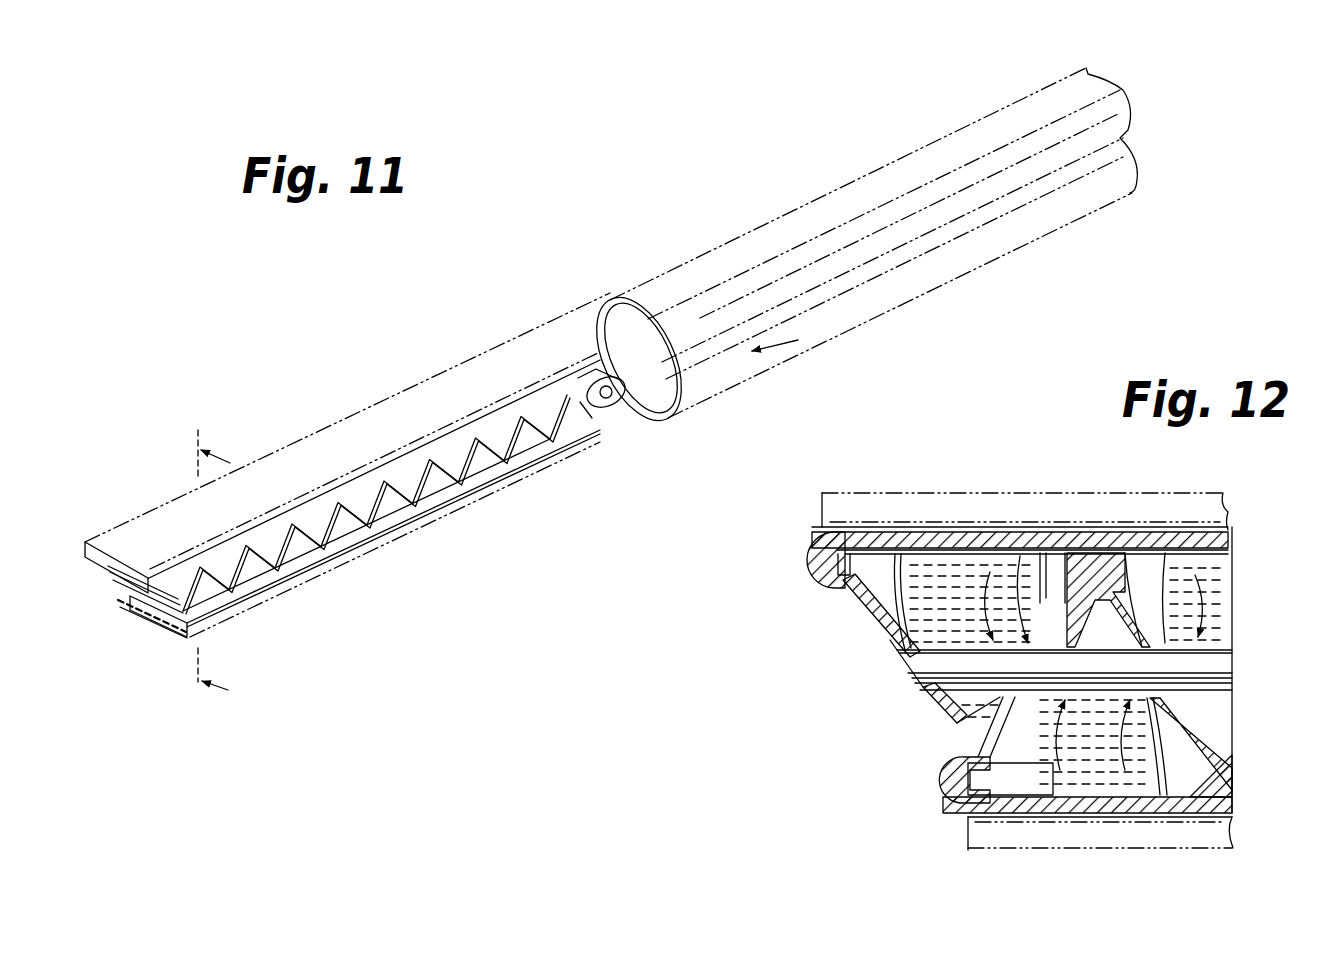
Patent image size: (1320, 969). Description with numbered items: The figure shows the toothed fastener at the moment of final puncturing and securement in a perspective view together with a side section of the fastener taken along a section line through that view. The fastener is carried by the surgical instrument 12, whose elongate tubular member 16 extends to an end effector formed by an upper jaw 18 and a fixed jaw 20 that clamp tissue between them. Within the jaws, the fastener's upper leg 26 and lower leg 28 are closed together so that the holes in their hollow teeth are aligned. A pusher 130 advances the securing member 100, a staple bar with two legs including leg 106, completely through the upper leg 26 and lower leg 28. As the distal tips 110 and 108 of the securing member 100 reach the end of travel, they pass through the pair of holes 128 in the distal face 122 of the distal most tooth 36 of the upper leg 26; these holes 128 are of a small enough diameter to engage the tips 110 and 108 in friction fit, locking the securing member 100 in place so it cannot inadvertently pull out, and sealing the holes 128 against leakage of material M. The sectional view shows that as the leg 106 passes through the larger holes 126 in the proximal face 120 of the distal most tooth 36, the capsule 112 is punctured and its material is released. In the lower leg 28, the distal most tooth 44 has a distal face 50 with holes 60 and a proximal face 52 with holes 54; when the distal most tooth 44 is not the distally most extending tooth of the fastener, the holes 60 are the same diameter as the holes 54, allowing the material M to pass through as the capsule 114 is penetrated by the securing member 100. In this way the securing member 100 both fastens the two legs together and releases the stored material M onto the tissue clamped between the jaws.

In FIG. 11, the elongate tubular member 16 is at (686, 262).
In FIG. 11, the pusher 130 is at (752, 262).
In FIG. 11, the upper jaw 18 is at (353, 433).
In FIG. 11, the fixed jaw 20 is at (385, 543).
In FIG. 11, the upper leg 26 is at (282, 500).
In FIG. 12, the upper leg 26 is at (812, 560).
In FIG. 11, the lower leg 28 is at (300, 557).
In FIG. 12, the lower leg 28 is at (1220, 773).
In FIG. 11, the securing member 100 is at (602, 398).
In FIG. 11, the holes 128 is at (150, 573).
In FIG. 12, the holes 128 is at (923, 693).
In FIG. 11, the distal tip 110 is at (115, 582).
In FIG. 12, the distal tip 110 is at (913, 662).
In FIG. 11, the distal face 122 is at (127, 619).
In FIG. 11, the distal tip 108 is at (152, 625).
In FIG. 11, the surgical instrument 12 is at (190, 563).
In FIG. 12, the capsule 112 is at (890, 547).
In FIG. 12, the holes 126 is at (1025, 548).
In FIG. 12, the distal most tooth 36 is at (850, 603).
In FIG. 12, the holes 54 is at (1190, 670).
In FIG. 12, the leg 106 is at (1220, 670).
In FIG. 12, the proximal face 120 is at (960, 720).
In FIG. 12, the material M is at (943, 763).
In FIG. 12, the distal most tooth 44 is at (1000, 750).
In FIG. 12, the distal face 50 is at (1020, 750).
In FIG. 12, the holes 60 is at (1060, 790).
In FIG. 12, the capsule 114 is at (1150, 783).
In FIG. 12, the proximal face 52 is at (1173, 753).